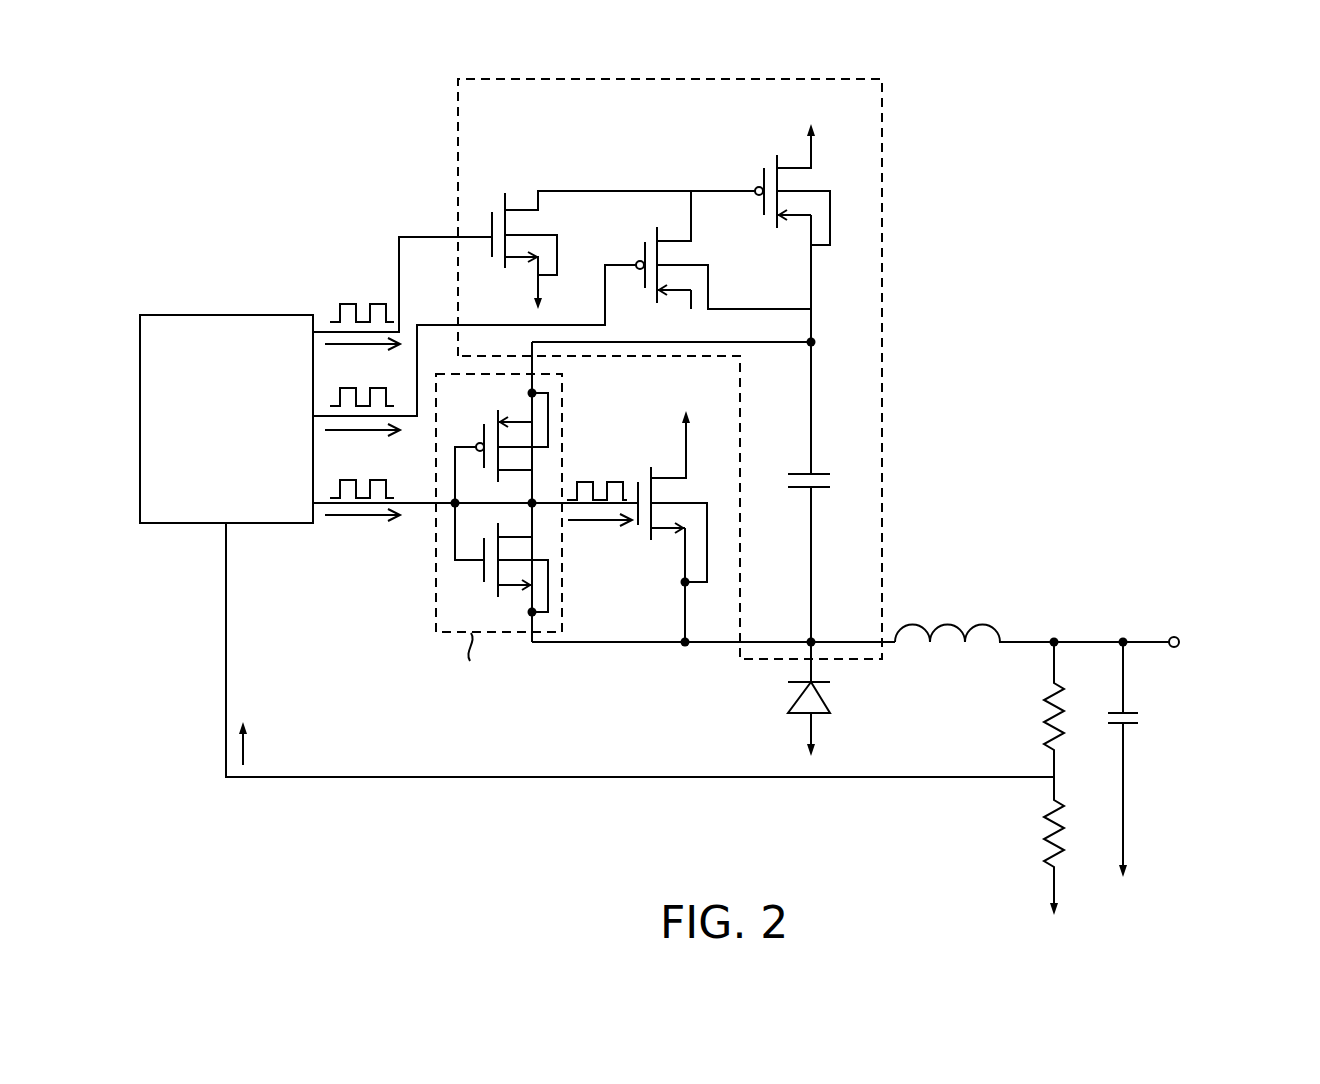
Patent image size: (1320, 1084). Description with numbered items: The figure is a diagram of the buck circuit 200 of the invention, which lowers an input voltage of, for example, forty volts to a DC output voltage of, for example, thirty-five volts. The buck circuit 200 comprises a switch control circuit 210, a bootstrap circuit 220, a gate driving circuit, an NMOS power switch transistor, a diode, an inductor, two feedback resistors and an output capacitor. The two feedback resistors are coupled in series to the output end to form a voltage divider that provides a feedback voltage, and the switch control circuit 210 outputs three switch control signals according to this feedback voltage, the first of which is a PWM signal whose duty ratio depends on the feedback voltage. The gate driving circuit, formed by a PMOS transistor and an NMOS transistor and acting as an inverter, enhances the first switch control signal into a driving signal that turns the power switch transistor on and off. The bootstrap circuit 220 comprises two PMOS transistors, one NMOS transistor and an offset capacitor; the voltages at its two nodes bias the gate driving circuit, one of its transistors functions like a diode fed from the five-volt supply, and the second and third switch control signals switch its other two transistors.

The buck circuit 200 is at (1170, 212).
The switch control circuit 210 is at (228, 315).
The bootstrap circuit 220 is at (884, 486).